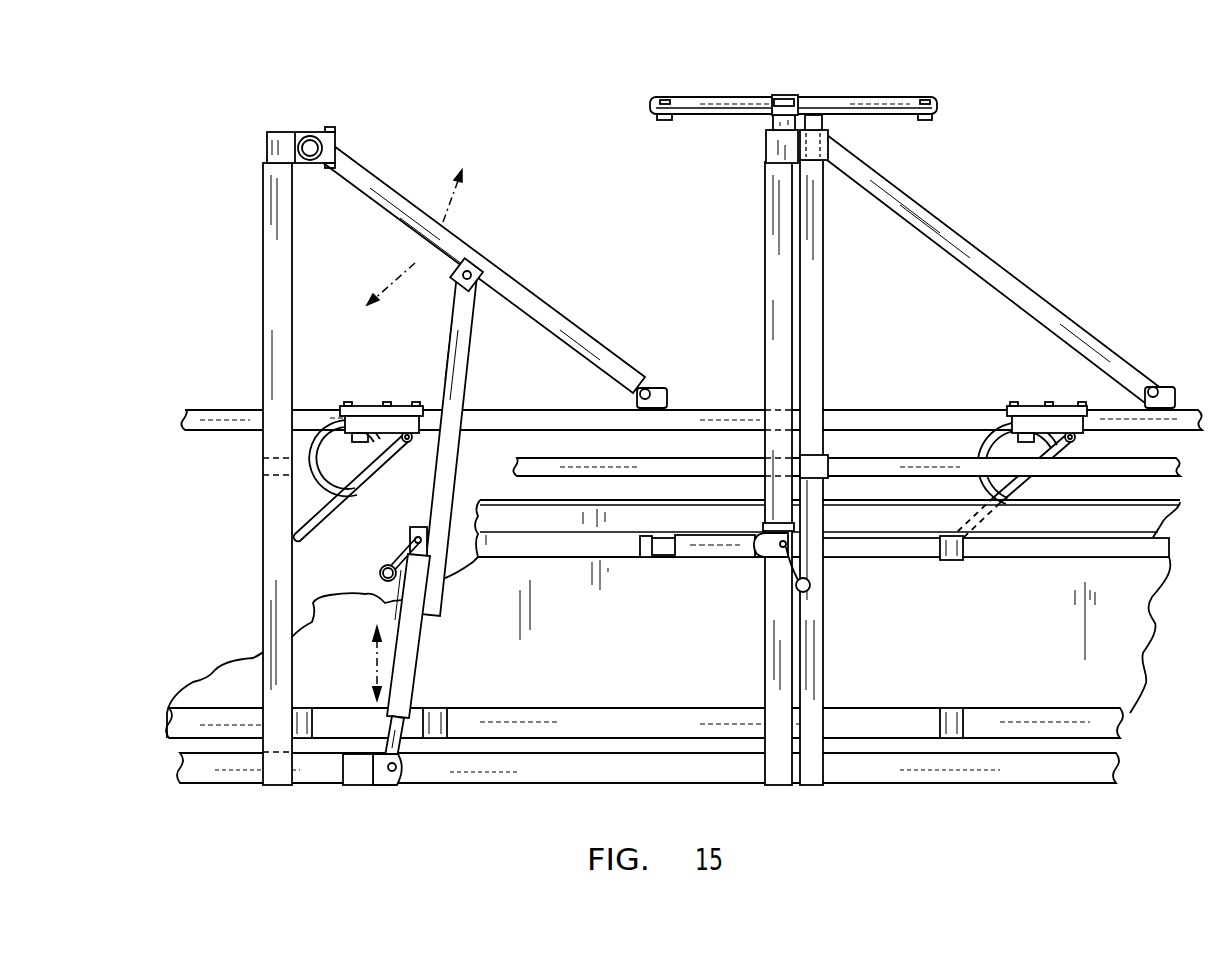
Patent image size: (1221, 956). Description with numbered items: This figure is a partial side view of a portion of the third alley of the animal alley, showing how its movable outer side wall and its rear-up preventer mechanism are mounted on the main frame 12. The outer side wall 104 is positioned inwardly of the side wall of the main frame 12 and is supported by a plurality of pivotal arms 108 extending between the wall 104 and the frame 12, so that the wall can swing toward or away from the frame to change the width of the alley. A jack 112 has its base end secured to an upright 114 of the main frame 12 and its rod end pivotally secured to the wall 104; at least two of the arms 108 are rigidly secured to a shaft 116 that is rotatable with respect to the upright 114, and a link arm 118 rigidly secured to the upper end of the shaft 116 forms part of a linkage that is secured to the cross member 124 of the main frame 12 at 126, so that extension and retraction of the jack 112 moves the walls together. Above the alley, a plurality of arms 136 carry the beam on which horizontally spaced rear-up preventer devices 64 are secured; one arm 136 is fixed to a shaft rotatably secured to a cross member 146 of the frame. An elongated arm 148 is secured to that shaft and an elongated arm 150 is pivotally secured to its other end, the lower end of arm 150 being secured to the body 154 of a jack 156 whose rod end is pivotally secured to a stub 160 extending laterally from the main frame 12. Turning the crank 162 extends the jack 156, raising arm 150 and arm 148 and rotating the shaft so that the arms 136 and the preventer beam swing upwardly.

The main frame 12 is at (238, 786).
The rear-up preventer device 64 is at (367, 402).
The outer side wall 104 is at (1046, 668).
The pivotal arm 108 is at (873, 547).
The jack 112 is at (730, 550).
The upright 114 is at (783, 228).
The shaft 116 is at (822, 318).
The link arm 118 is at (893, 112).
The cross member 124 is at (777, 152).
The link arm attachment point 126 is at (793, 98).
The arm 136 is at (506, 284).
The cross member 146 is at (272, 150).
The elongated arm 148 is at (390, 237).
The elongated arm 150 is at (463, 371).
The body of jack 154 is at (407, 650).
The jack 156 is at (172, 732).
The stub 160 is at (357, 773).
The crank 162 is at (393, 557).